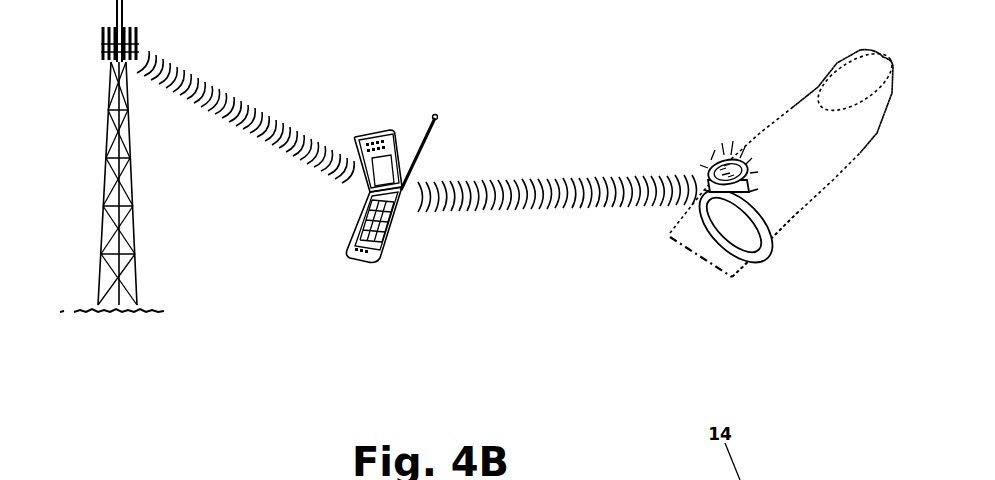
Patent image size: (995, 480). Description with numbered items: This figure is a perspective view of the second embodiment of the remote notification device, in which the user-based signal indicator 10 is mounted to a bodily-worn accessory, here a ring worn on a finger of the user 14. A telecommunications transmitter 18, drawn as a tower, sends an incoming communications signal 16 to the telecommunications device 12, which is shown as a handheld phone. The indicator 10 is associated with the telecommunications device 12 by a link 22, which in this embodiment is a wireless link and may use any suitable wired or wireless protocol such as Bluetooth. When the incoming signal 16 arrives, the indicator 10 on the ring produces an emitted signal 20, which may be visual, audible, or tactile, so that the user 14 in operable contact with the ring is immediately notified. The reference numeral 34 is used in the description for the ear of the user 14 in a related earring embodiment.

The user-based signal indicator 10 is at (710, 164).
The telecommunications device 12 is at (379, 128).
The user 14 is at (821, 76).
The incoming communications signal 16 is at (223, 82).
The telecommunications transmitter 18 is at (107, 110).
The emitted signal 20 is at (778, 160).
The link 22 is at (491, 179).
The ear 34 is at (818, 152).